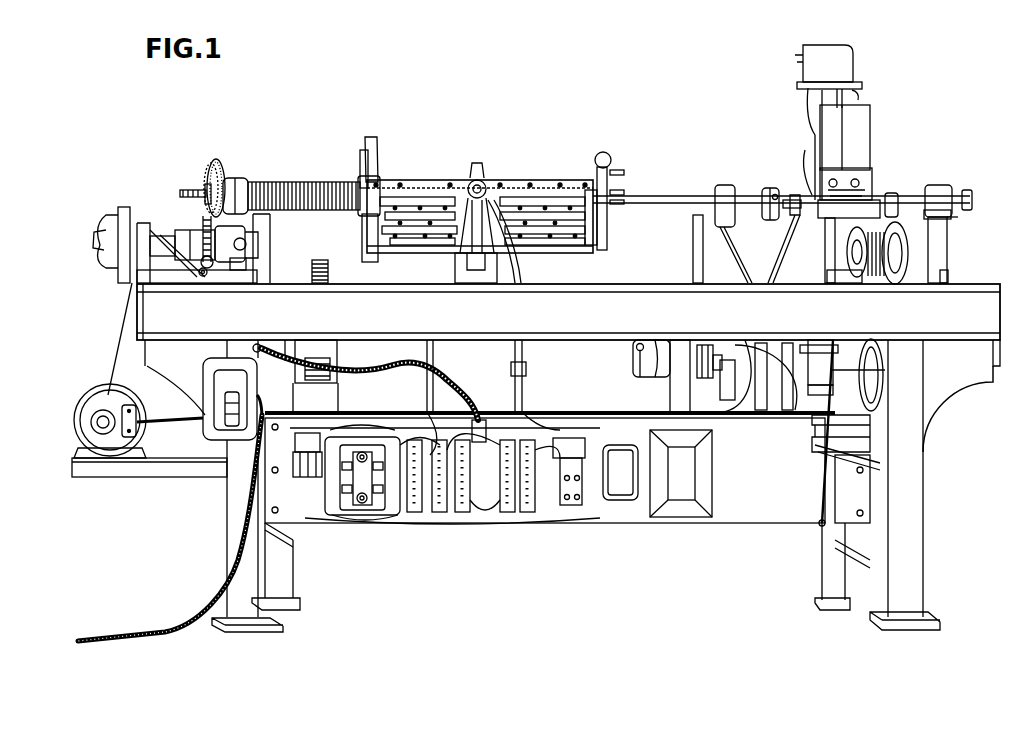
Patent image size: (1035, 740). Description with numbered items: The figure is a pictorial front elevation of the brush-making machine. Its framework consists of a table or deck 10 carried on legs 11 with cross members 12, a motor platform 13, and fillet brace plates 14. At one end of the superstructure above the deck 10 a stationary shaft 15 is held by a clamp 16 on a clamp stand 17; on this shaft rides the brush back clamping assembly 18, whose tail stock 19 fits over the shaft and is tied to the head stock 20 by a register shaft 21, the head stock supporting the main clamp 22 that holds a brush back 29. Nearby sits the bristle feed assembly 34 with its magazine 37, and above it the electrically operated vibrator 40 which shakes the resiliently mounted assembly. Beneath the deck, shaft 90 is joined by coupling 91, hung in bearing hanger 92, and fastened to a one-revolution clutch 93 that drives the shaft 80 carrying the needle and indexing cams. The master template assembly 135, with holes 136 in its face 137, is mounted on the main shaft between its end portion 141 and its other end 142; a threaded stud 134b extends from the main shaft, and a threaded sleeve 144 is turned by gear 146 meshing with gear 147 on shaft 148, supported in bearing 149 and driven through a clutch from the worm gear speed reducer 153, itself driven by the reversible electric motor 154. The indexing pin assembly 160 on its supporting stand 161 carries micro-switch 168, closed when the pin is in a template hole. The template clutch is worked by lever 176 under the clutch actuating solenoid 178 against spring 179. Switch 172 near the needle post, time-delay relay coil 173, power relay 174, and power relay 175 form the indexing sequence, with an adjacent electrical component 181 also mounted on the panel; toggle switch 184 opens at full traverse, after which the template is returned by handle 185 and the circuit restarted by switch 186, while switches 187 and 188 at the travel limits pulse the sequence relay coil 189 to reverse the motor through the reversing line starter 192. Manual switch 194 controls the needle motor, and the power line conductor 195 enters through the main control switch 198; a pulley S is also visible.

The table or deck 10 is at (985, 288).
The legs 11 is at (227, 492).
The cross members 12 is at (872, 507).
The motor platform 13 is at (118, 470).
The fillet brace plates 14 is at (985, 352).
The stationary shaft 15 is at (972, 200).
The clamp 16 is at (950, 217).
The clamp stand 17 is at (948, 251).
The clamping assembly 18 is at (830, 225).
The tail stock 19 is at (890, 200).
The head stock 20 is at (765, 192).
The register shaft 21 is at (792, 212).
The main clamp 22 is at (810, 165).
The brush back 29 is at (792, 196).
The bristle feed assembly 34 is at (877, 129).
The magazine 37 is at (858, 110).
The vibrator 40 is at (853, 60).
The shaft 80 is at (872, 333).
The shaft 90 is at (740, 365).
The coupling 91 is at (722, 375).
The bearing hanger 92 is at (760, 392).
The one-revolution clutch 93 is at (814, 385).
The threaded stud 134b is at (190, 190).
The master template assembly 135 is at (408, 176).
The holes 136 is at (420, 197).
The face 137 is at (515, 192).
The end portion 141 is at (596, 236).
The other end 142 is at (362, 232).
The sleeve 144 is at (295, 182).
The gear 146 is at (216, 160).
The gear 147 is at (203, 222).
The shaft 148 is at (247, 244).
The bearing 149 is at (250, 254).
The worm gear speed reducer 153 is at (120, 210).
The electric motor 154 is at (76, 424).
The indexing pin assembly 160 is at (437, 268).
The supporting stand 161 is at (520, 271).
The micro-switch 168 is at (468, 185).
The switch 172 is at (780, 283).
The time-delay relay coil 173 is at (570, 512).
The power relay 174 is at (605, 452).
The power relay 175 is at (315, 478).
The lever 176 is at (198, 283).
The clutch actuating solenoid 178 is at (340, 383).
The spring 179 is at (329, 270).
The relay 181 is at (620, 505).
The switch 184 is at (715, 190).
The handle 185 is at (609, 152).
The switch 186 is at (946, 282).
The switch 187 is at (270, 226).
The switch 188 is at (660, 206).
The sequence relay coil 189 is at (712, 474).
The reversing line starter 192 is at (360, 525).
The manual switch 194 is at (742, 283).
The power line conductor 195 is at (178, 602).
The main control switch 198 is at (215, 430).
The pulley S is at (897, 284).